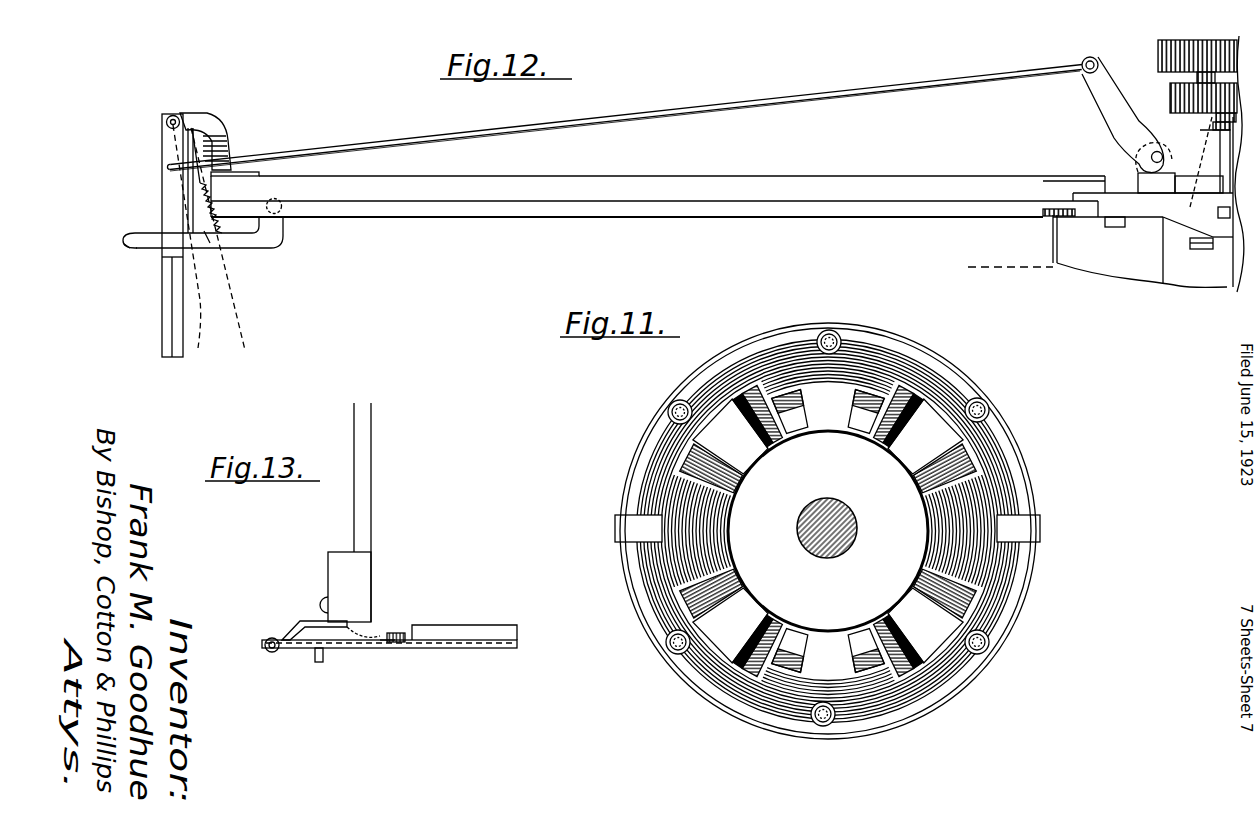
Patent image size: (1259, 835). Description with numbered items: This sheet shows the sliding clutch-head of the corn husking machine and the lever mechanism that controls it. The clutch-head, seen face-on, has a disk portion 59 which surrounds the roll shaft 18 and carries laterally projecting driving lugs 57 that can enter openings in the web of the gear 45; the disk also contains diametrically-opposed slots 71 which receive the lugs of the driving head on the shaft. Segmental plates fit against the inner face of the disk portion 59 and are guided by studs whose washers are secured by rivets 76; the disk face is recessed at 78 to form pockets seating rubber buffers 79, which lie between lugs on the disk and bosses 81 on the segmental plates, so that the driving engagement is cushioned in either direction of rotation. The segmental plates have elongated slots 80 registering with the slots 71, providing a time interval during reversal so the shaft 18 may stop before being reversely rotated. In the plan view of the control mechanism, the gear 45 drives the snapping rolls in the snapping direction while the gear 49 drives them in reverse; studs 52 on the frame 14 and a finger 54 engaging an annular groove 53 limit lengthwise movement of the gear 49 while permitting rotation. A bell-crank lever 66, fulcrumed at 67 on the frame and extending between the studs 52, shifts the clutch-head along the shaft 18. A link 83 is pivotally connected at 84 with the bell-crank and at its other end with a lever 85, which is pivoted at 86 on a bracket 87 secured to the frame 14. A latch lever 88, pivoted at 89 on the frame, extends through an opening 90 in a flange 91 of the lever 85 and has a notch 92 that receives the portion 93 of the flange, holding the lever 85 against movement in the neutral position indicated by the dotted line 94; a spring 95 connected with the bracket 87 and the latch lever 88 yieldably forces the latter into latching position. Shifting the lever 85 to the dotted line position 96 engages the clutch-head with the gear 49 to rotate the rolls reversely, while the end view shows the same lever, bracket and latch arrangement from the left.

In FIG. 12, the frame 14 is at (513, 218).
In FIG. 13, the frame 14 is at (364, 578).
In FIG. 11, the shaft 18 is at (828, 531).
In FIG. 12, the gear 45 is at (1158, 57).
In FIG. 12, the gear 49 is at (1170, 95).
In FIG. 12, the studs 52 is at (1215, 180).
In FIG. 12, the annular groove 53 is at (1197, 78).
In FIG. 12, the finger 54 is at (1200, 130).
In FIG. 11, the driving lugs 57 is at (834, 512).
In FIG. 11, the disk portion 59 is at (828, 531).
In FIG. 12, the bell-crank lever 66 is at (1106, 117).
In FIG. 12, the fulcrum 67 is at (1151, 157).
In FIG. 11, the slots 71 is at (828, 531).
In FIG. 11, the rivets 76 is at (830, 540).
In FIG. 11, the recesses 78 is at (828, 530).
In FIG. 11, the rubber buffers 79 is at (828, 530).
In FIG. 11, the slots 80 is at (828, 527).
In FIG. 11, the bosses 81 is at (829, 528).
In FIG. 12, the link 83 is at (278, 160).
In FIG. 13, the link 83 is at (320, 662).
In FIG. 12, the pivot 84 is at (1084, 74).
In FIG. 12, the lever 85 is at (162, 186).
In FIG. 13, the lever 85 is at (478, 656).
In FIG. 12, the pivot 86 is at (166, 121).
In FIG. 13, the pivot 86 is at (272, 653).
In FIG. 12, the bracket 87 is at (205, 122).
In FIG. 13, the bracket 87 is at (283, 638).
In FIG. 12, the latch lever 88 is at (268, 249).
In FIG. 13, the latch lever 88 is at (395, 648).
In FIG. 12, the pivot 89 is at (282, 200).
In FIG. 12, the opening 90 is at (160, 258).
In FIG. 13, the opening 90 is at (405, 630).
In FIG. 12, the flange 91 is at (162, 322).
In FIG. 13, the flange 91 is at (474, 625).
In FIG. 12, the notch 92 is at (127, 250).
In FIG. 12, the portion 93 is at (146, 234).
In FIG. 13, the portion 93 is at (380, 633).
In FIG. 12, the dotted line position 94 is at (198, 355).
In FIG. 12, the spring 95 is at (212, 190).
In FIG. 12, the dotted line position 96 is at (232, 308).